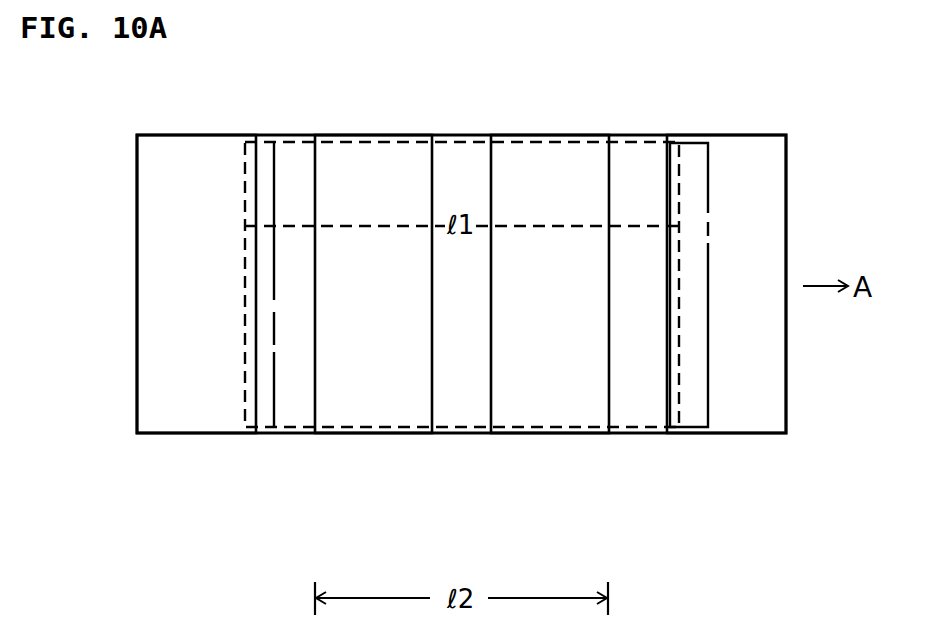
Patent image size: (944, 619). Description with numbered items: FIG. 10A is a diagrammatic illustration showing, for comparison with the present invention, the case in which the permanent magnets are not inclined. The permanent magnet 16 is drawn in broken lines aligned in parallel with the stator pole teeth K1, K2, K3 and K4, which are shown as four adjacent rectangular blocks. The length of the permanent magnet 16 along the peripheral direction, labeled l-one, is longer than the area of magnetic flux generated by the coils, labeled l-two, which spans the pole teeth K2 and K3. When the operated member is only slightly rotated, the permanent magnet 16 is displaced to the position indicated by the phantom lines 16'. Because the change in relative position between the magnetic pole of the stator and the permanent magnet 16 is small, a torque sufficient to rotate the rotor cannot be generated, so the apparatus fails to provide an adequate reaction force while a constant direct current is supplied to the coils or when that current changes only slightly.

The pole tooth K1 is at (195, 135).
The pole tooth K2 is at (373, 135).
The pole tooth K3 is at (551, 135).
The pole tooth K4 is at (727, 135).
The permanent magnet 16 is at (475, 327).
The displaced permanent magnet position 16' is at (722, 327).